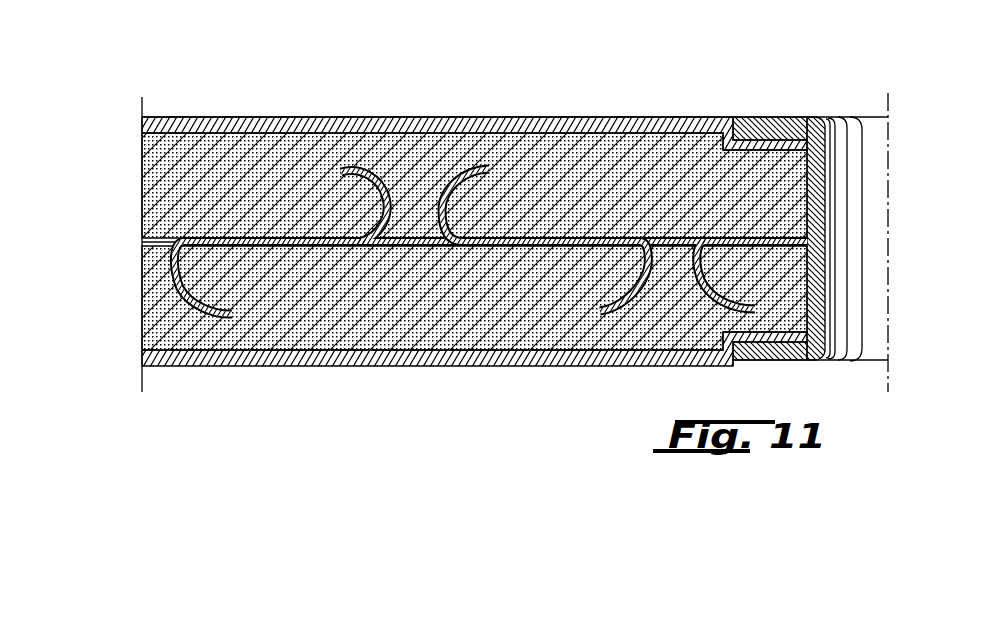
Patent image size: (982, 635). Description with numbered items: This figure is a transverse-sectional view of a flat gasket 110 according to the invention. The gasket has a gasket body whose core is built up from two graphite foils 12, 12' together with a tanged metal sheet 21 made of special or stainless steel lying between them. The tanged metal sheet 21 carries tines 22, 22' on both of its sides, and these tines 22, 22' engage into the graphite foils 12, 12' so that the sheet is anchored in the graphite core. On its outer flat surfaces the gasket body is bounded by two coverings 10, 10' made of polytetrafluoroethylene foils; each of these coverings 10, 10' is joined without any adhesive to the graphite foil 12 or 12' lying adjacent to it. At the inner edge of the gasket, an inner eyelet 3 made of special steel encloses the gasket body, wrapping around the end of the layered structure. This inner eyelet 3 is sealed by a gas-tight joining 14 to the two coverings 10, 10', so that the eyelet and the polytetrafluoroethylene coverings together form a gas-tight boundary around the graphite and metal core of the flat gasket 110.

The flat gasket 110 is at (340, 86).
The covering 10 is at (474, 100).
The covering 10' is at (474, 378).
The graphite foil 12 is at (442, 187).
The graphite foil 12' is at (442, 298).
The gas-tight joining 14 is at (760, 128).
The inner eyelet 3 is at (797, 118).
The tanged metal sheet 21 is at (514, 265).
The tines 22 is at (466, 156).
The tines 22' is at (624, 333).